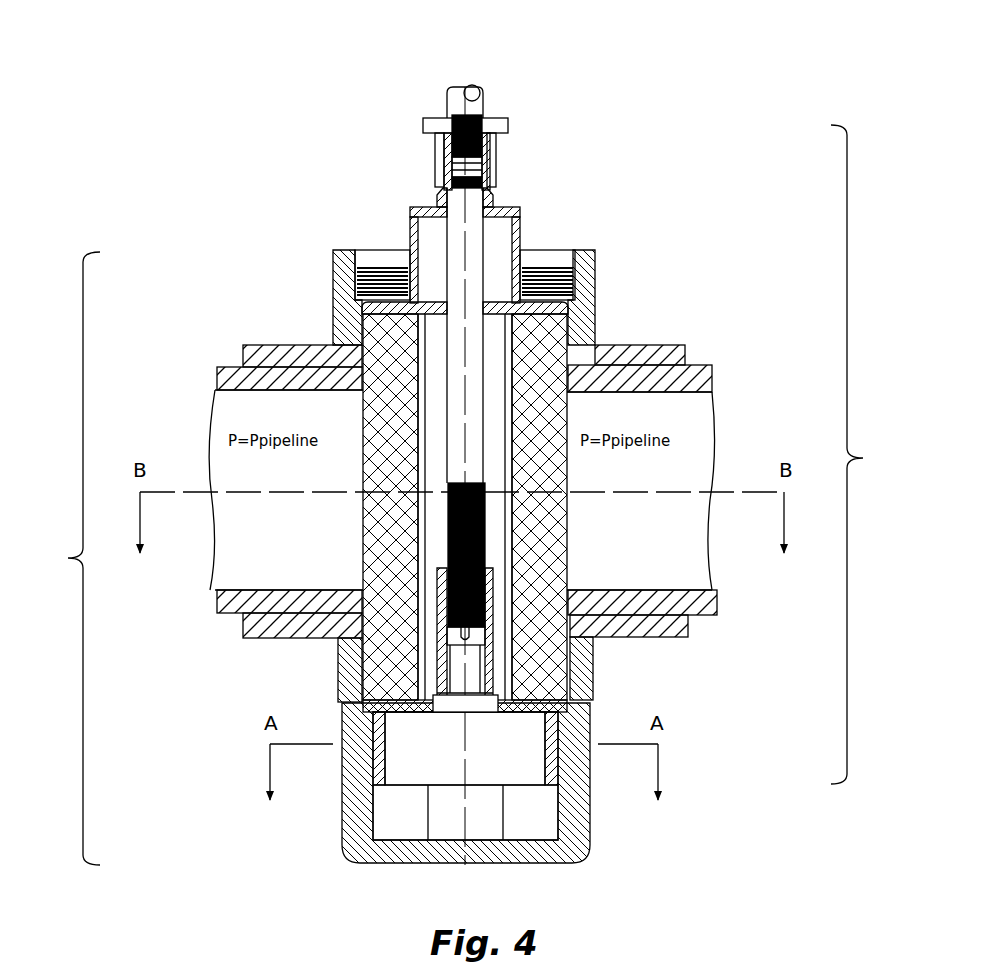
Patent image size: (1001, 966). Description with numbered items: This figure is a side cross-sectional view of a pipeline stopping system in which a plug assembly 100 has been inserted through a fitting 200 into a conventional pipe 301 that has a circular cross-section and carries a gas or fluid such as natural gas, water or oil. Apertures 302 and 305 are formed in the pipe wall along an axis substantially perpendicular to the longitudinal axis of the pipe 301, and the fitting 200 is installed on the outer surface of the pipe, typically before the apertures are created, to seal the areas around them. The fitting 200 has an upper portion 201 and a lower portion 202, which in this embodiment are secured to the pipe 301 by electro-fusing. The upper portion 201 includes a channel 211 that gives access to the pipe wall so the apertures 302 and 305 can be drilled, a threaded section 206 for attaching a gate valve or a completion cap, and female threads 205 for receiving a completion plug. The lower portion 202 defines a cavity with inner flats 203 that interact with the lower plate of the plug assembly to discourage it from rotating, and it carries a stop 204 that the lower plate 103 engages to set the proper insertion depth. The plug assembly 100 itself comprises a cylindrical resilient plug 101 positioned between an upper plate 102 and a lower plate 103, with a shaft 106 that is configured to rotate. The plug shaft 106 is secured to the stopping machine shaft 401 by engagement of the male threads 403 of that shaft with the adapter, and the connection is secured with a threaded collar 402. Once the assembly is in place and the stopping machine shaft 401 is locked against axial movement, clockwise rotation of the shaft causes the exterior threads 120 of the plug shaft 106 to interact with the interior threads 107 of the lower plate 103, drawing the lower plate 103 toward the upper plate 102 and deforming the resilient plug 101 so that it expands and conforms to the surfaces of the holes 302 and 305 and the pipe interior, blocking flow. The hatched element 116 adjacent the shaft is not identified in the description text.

The plug assembly 100 is at (871, 454).
The fitting 200 is at (60, 558).
The resilient plug 101 is at (545, 368).
The upper plate 102 is at (410, 212).
The lower plate 103 is at (378, 785).
The shaft 106 is at (470, 248).
The interior threads 107 is at (438, 590).
The stem seal 116 is at (445, 170).
The exterior threads 120 is at (490, 548).
The upper portion 201 is at (668, 350).
The lower portion 202 is at (676, 636).
The inner flats 203 is at (568, 782).
The stop 204 is at (343, 703).
The female threads 205 is at (353, 275).
The threaded section 206 is at (598, 250).
The channel 211 is at (390, 262).
The pipe 301 is at (222, 370).
The aperture 302 is at (347, 365).
The aperture 305 is at (595, 640).
The stopping machine shaft 401 is at (476, 103).
The threaded collar 402 is at (433, 127).
The male threads 403 is at (484, 115).